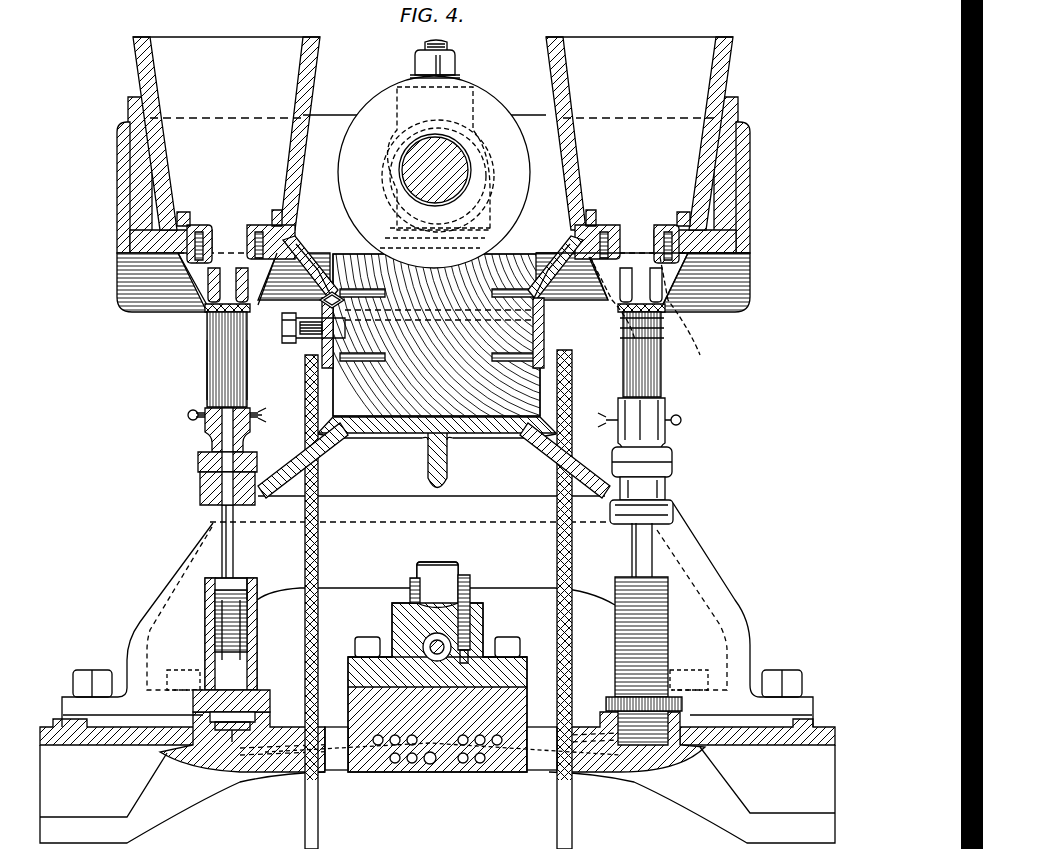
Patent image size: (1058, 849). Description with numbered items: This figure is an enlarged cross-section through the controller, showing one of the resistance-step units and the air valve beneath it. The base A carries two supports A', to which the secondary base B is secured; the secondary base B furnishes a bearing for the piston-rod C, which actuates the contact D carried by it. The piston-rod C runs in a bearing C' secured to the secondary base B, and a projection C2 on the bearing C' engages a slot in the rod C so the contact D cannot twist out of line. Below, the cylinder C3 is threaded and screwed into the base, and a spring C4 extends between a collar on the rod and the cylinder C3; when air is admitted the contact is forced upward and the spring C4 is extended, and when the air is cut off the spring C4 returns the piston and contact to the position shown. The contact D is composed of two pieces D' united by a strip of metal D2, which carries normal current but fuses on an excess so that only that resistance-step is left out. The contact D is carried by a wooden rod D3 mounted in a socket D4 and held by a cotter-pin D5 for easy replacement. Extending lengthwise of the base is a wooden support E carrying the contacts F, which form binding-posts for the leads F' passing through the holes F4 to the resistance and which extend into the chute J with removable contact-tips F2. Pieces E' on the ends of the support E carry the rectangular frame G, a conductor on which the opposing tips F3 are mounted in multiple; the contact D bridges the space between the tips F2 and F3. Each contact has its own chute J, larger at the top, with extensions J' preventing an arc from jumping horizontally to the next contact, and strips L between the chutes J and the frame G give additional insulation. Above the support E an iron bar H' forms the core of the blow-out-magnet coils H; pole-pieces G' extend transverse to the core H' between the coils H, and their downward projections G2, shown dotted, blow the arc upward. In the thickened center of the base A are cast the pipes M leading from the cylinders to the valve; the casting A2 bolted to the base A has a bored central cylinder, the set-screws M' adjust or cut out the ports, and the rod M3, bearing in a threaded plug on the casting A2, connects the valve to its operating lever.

The base A is at (529, 436).
The supports A' is at (437, 611).
The casting A2 is at (475, 625).
The secondary base B is at (450, 447).
The piston-rod C is at (437, 541).
The bearing C' is at (529, 405).
The projection C2 is at (198, 470).
The cylinder C3 is at (258, 700).
The spring C4 is at (205, 615).
The contact D is at (431, 410).
The pieces D' is at (529, 405).
The strip of metal D2 is at (280, 330).
The wooden rod D3 is at (210, 373).
The socket D4 is at (207, 436).
The cotter-pin D5 is at (188, 415).
The support E is at (529, 389).
The pieces E' is at (644, 301).
The contacts F is at (529, 405).
The leads F' is at (529, 439).
The contact-tips F2 is at (258, 227).
The contact-tip F3 is at (200, 227).
The holes F4 is at (338, 748).
The rectangular frame G is at (529, 405).
The pieces G' is at (461, 152).
The projections G2 is at (653, 312).
The blow-out-magnet coils H is at (434, 154).
The iron bar H' is at (529, 405).
The chute J is at (529, 405).
The extensions J' is at (529, 404).
The strips L is at (128, 102).
The pipes M is at (529, 421).
The set-screws M' is at (529, 404).
The rod M3 is at (428, 645).